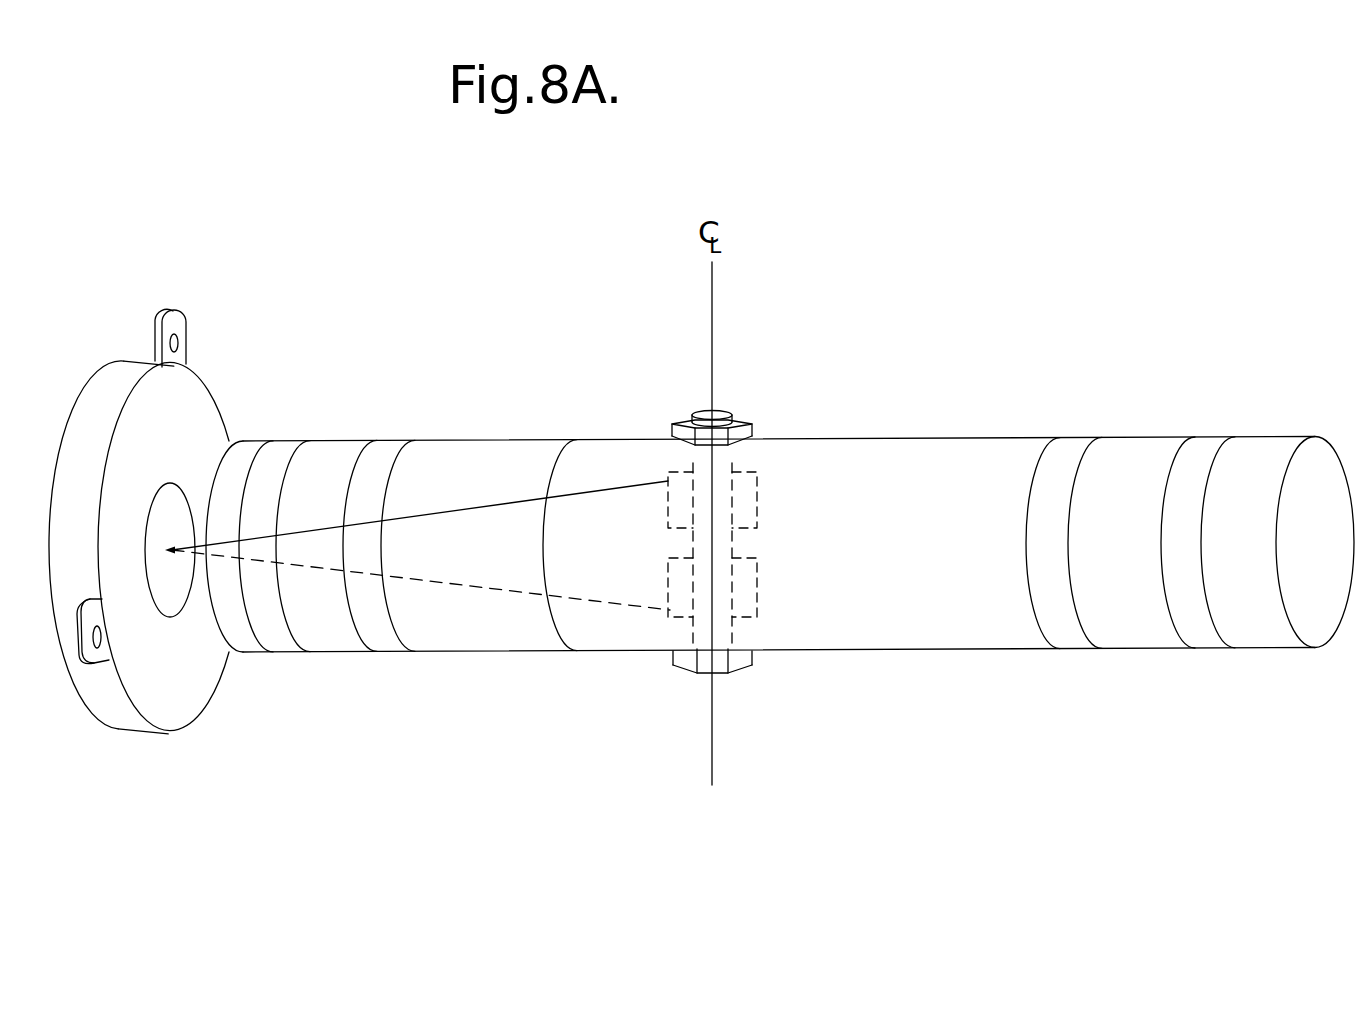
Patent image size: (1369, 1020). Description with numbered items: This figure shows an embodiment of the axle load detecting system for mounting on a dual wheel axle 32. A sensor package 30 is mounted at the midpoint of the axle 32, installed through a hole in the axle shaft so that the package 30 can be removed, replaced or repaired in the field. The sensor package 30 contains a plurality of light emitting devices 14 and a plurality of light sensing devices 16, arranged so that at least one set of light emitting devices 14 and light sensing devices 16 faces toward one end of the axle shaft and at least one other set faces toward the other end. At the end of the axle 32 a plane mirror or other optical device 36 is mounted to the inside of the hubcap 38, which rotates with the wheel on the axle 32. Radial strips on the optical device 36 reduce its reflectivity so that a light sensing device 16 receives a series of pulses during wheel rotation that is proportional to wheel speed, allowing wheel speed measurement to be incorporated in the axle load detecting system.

The light emitting devices 14 is at (660, 618).
The light sensing devices 16 is at (660, 503).
The sensor package 30 is at (722, 410).
The dual wheel axle 32 is at (990, 443).
The optical device 36 is at (165, 590).
The hubcap 38 is at (166, 291).